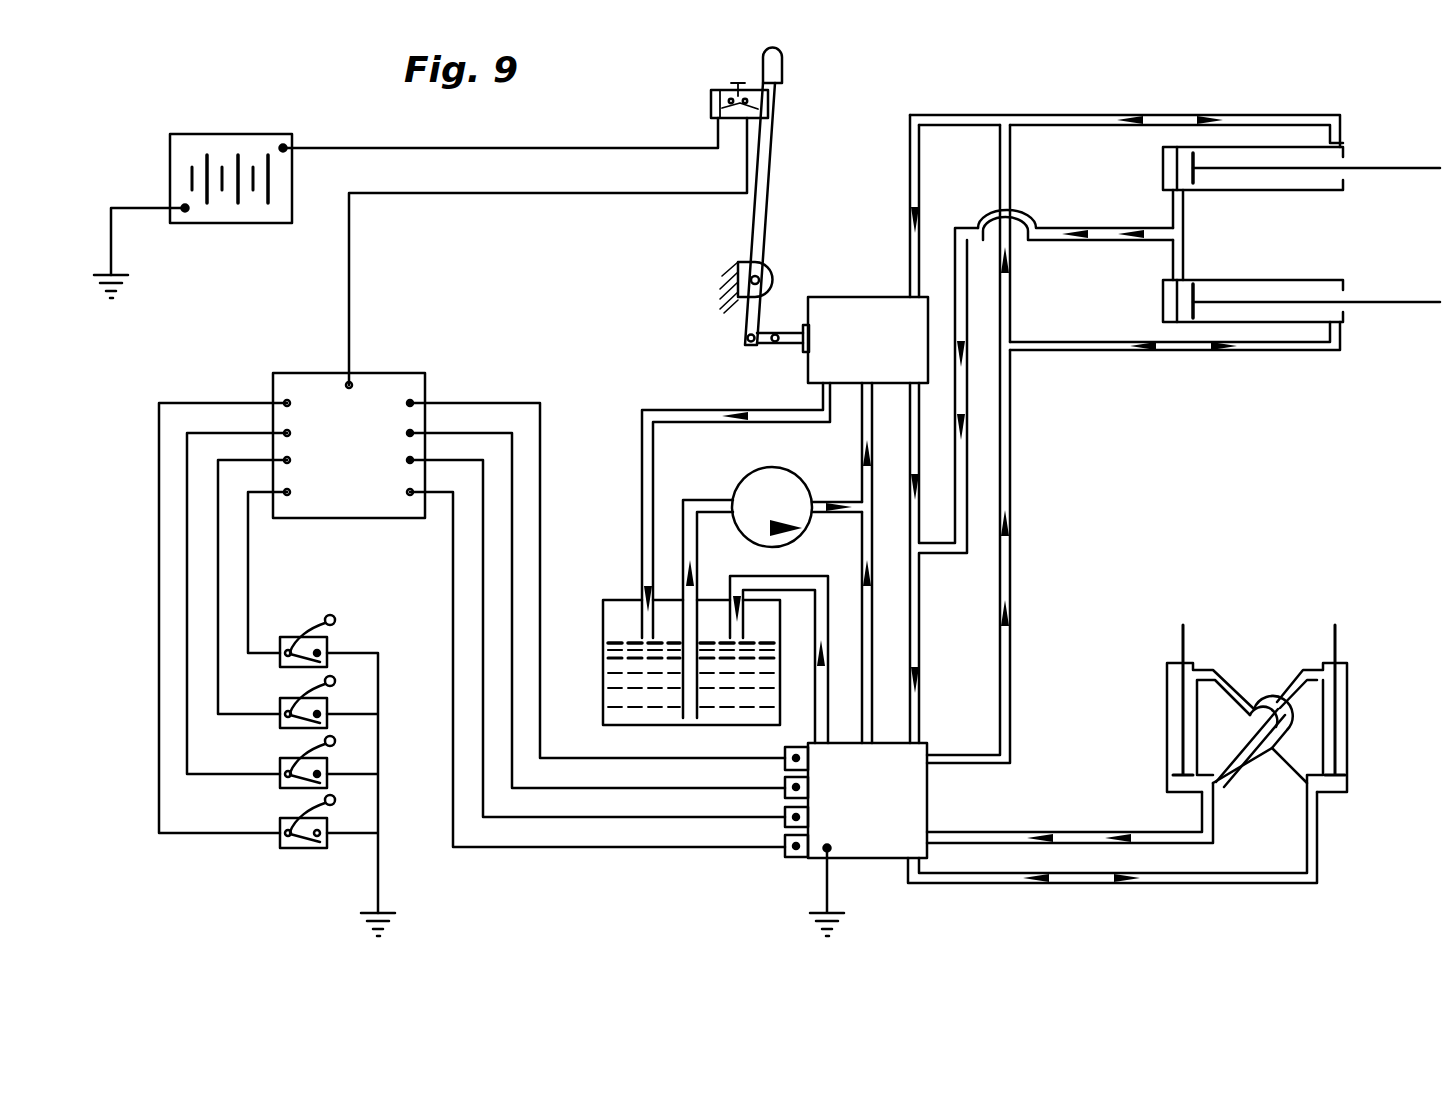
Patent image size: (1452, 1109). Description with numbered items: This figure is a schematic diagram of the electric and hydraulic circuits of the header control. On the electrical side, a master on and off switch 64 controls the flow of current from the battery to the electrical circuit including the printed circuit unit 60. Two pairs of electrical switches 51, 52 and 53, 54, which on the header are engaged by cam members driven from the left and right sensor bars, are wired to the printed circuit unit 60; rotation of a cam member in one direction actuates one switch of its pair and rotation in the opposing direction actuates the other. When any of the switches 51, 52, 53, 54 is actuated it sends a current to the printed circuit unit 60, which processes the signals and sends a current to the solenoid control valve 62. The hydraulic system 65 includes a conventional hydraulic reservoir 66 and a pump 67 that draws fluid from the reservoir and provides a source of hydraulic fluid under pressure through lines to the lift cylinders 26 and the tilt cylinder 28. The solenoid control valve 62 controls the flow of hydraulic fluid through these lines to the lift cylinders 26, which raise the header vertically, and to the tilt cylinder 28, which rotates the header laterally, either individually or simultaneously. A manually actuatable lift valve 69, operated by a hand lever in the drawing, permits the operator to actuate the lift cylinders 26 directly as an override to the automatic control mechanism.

The hydraulic lift cylinders 26 is at (1242, 197).
The hydraulic tilt cylinder 28 is at (1323, 664).
The electrical switch 51 is at (328, 641).
The electrical switch 52 is at (328, 702).
The electrical switch 53 is at (328, 762).
The electrical switch 54 is at (328, 822).
The printed circuit unit 60 is at (385, 385).
The solenoid control valve 62 is at (900, 795).
The master on and off switch 64 is at (718, 90).
The hydraulic system 65 is at (1115, 477).
The hydraulic reservoir 66 is at (620, 604).
The pump 67 is at (779, 470).
The manually actuatable lift valve 69 is at (880, 297).